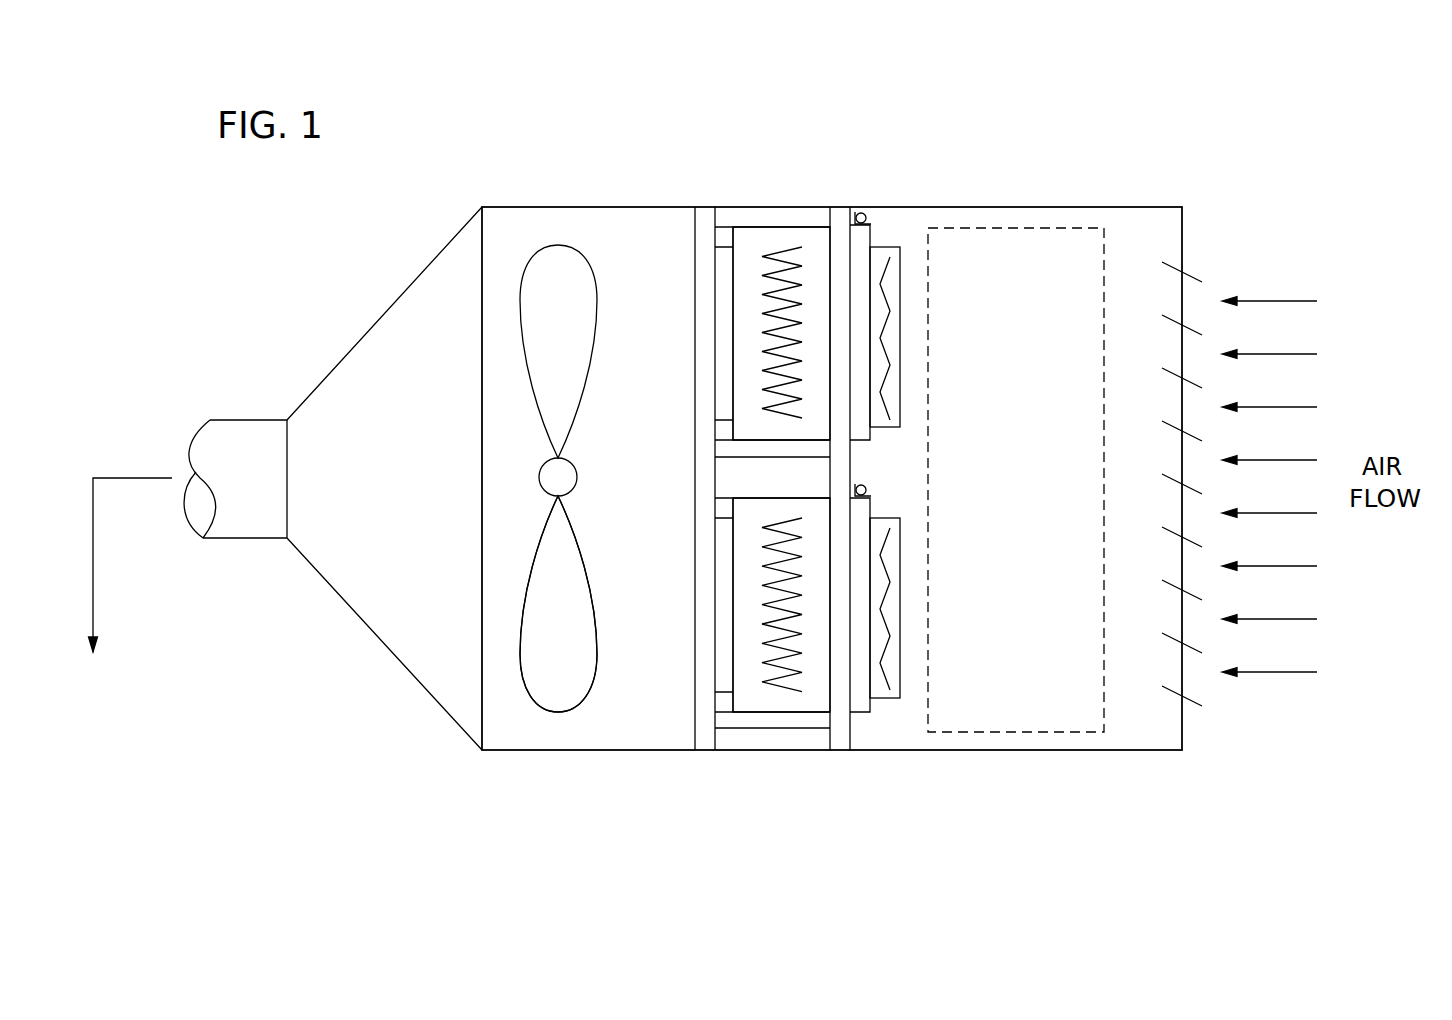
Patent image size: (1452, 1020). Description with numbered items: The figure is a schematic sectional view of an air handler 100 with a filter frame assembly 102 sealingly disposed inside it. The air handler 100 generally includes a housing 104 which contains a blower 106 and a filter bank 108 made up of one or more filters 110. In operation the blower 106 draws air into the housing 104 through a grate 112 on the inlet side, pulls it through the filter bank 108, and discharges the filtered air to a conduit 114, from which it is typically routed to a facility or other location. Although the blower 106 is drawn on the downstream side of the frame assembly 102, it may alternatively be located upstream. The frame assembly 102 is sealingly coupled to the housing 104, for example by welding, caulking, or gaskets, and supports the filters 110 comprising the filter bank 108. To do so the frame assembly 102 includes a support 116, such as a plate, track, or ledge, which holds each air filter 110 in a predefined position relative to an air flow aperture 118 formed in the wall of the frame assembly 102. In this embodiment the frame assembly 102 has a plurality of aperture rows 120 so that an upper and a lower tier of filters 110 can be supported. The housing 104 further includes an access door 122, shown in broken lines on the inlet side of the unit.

The air handler 100 is at (928, 90).
The filter frame assembly 102 is at (690, 667).
The housing 104 is at (528, 207).
The blower 106 is at (518, 632).
The filter bank 108 is at (728, 152).
The filter 110 is at (793, 207).
The grate 112 is at (1203, 265).
The conduit 114 is at (237, 420).
The support 116 is at (773, 732).
The air flow aperture 118 is at (733, 335).
The aperture rows 120 is at (748, 307).
The access door 122 is at (1043, 732).